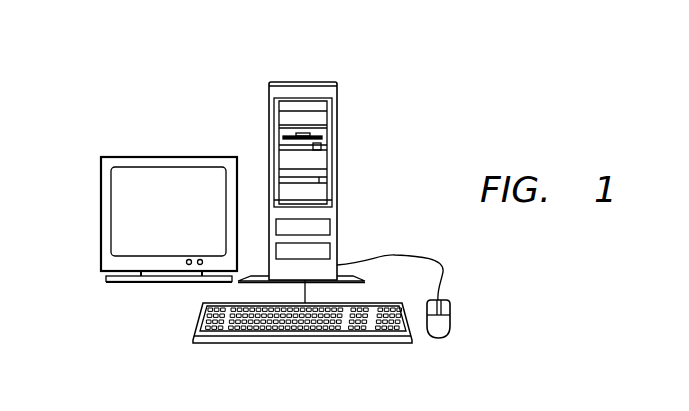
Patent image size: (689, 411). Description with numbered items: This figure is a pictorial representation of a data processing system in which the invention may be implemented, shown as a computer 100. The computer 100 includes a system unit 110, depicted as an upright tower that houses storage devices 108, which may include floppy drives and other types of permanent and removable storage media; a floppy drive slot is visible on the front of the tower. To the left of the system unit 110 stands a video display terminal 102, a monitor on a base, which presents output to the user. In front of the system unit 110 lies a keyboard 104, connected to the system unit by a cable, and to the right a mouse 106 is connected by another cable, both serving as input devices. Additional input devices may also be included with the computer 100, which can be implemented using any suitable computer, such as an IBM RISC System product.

The computer 100 is at (198, 66).
The video display terminal 102 is at (120, 213).
The keyboard 104 is at (222, 323).
The mouse 106 is at (440, 328).
The storage devices 108 is at (322, 133).
The system unit 110 is at (338, 212).